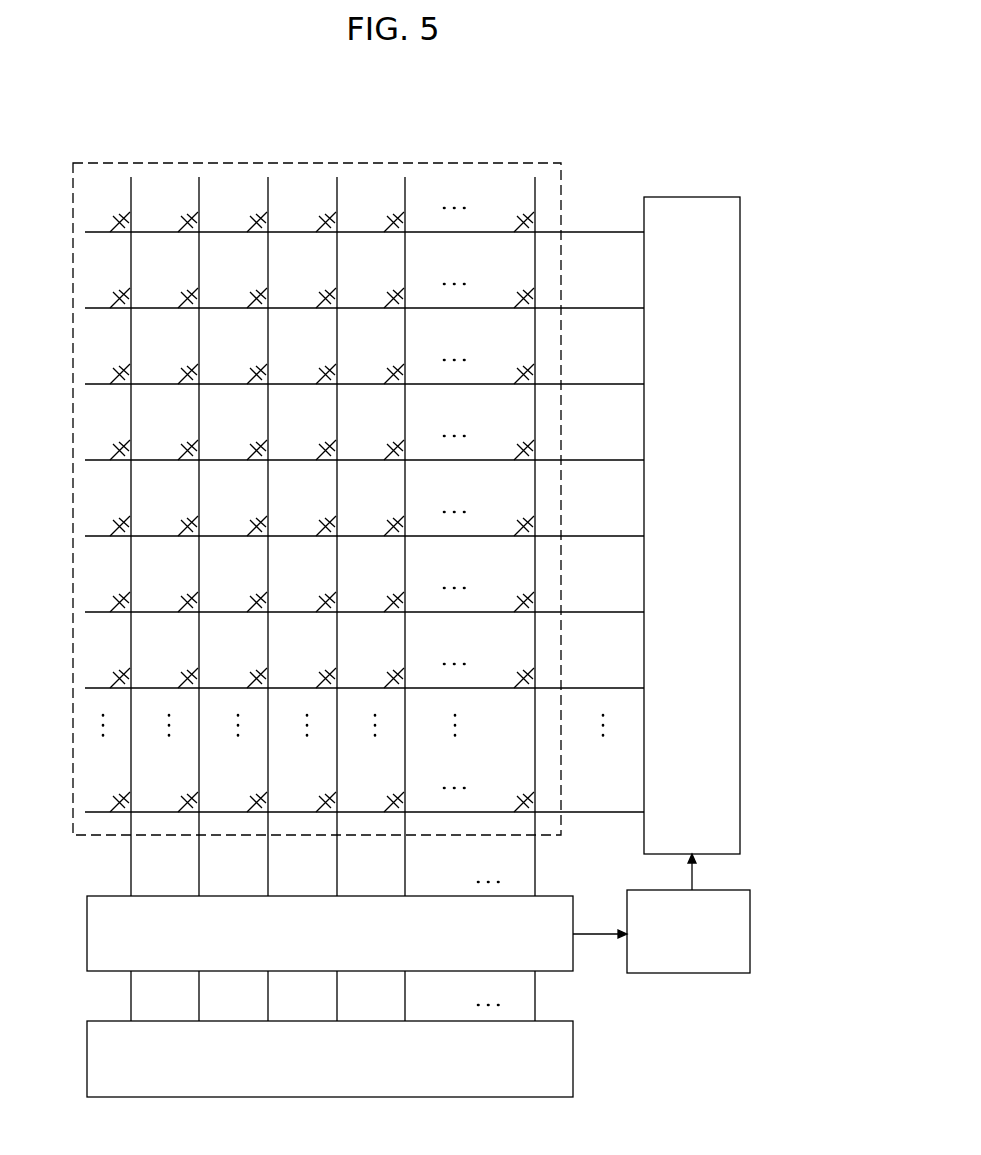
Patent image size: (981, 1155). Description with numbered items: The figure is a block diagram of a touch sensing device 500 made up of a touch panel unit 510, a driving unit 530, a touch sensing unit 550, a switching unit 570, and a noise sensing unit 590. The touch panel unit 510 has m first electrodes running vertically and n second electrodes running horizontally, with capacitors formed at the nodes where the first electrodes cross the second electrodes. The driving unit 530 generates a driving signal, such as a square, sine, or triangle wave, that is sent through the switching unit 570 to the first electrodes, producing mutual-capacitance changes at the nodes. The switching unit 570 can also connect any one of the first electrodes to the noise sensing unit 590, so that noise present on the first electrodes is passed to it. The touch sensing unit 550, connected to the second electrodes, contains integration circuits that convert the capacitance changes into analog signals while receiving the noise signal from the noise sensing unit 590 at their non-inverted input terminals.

The touch sensing device 500 is at (664, 118).
The touch panel unit 510 is at (432, 163).
The driving unit 530 is at (87, 1057).
The touch sensing unit 550 is at (740, 818).
The switching unit 570 is at (87, 934).
The noise sensing unit 590 is at (750, 942).